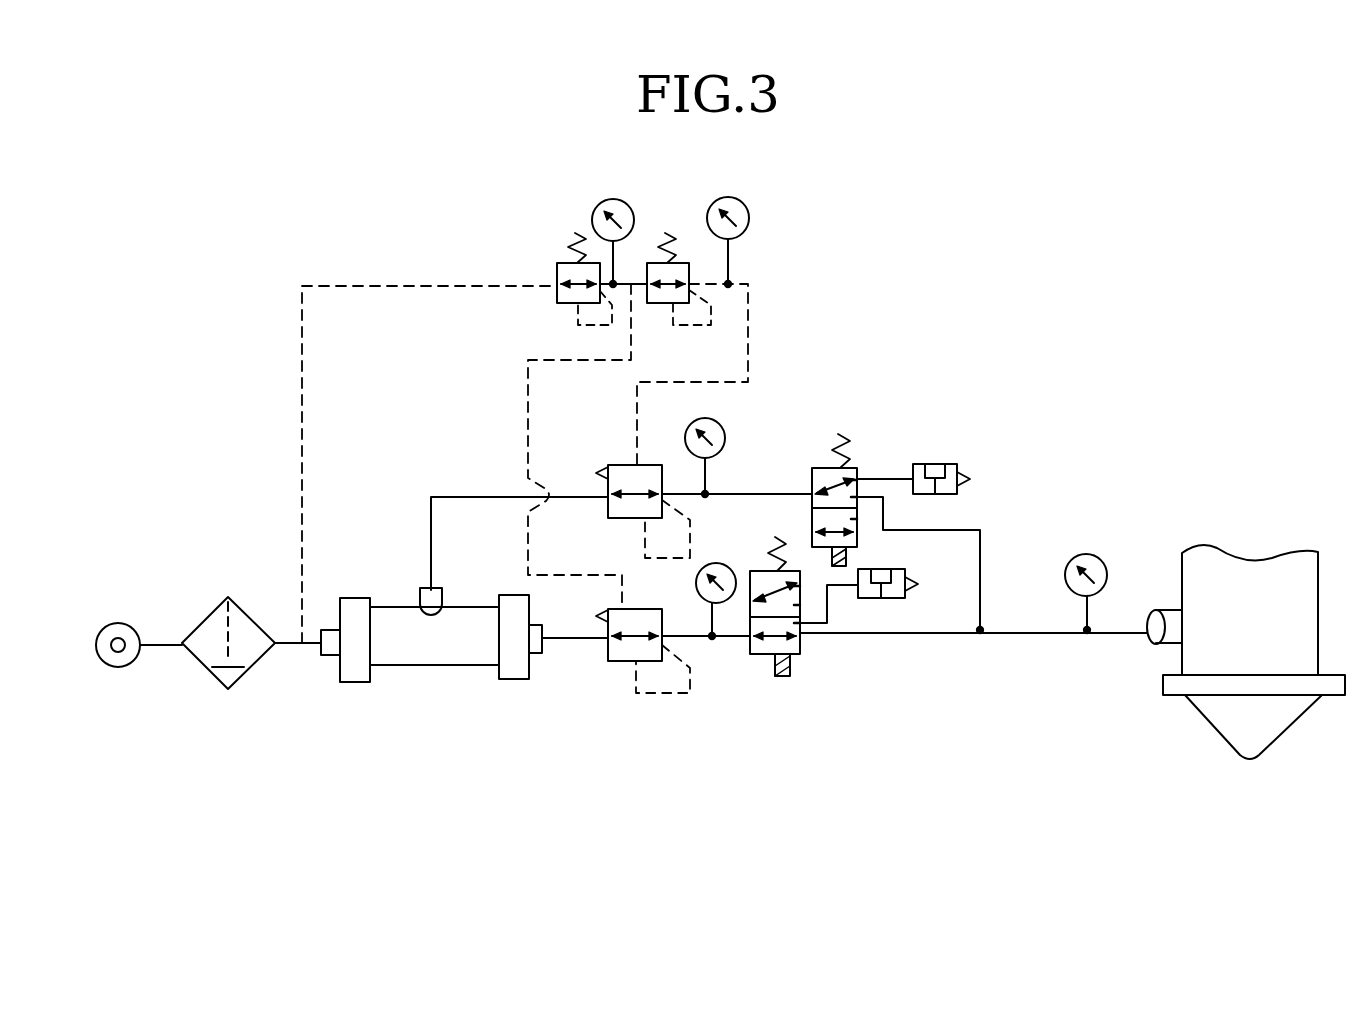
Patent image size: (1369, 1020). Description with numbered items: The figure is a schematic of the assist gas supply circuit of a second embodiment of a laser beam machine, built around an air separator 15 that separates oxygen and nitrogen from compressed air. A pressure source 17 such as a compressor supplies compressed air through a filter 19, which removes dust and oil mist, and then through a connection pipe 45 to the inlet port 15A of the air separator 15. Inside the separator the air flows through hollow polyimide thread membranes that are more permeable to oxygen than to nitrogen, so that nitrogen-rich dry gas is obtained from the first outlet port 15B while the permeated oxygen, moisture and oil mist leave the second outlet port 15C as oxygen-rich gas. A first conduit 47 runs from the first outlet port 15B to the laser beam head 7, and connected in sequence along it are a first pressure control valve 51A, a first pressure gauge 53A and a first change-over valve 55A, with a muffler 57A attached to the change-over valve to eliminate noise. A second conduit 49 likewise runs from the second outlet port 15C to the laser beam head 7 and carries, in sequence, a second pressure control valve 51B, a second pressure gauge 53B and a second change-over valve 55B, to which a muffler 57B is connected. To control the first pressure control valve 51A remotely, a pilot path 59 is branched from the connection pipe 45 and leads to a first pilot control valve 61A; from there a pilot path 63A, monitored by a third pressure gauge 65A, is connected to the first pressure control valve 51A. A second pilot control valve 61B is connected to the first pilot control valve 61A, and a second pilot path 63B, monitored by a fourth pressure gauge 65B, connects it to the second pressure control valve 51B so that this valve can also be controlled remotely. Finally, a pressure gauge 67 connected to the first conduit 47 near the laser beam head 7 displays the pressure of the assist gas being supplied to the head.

The laser beam head 7 is at (1308, 630).
The air separator 15 is at (430, 657).
The inlet port 15A is at (330, 656).
The first outlet port 15B is at (540, 656).
The second outlet port 15C is at (420, 604).
The pressure source 17 is at (122, 664).
The filter 19 is at (214, 682).
The connection pipe 45 is at (282, 647).
The first conduit 47 is at (875, 634).
The second conduit 49 is at (930, 528).
The first pressure control valve 51A is at (614, 663).
The second pressure control valve 51B is at (625, 476).
The first pressure gauge 53A is at (724, 605).
The second pressure gauge 53B is at (726, 438).
The first change-over valve 55A is at (801, 656).
The second change-over valve 55B is at (850, 468).
The muffler 57A is at (888, 599).
The muffler 57B is at (940, 464).
The pilot path 59 is at (300, 412).
The first pilot control valve 61A is at (556, 297).
The second pilot control valve 61B is at (682, 262).
The pilot path 63A is at (526, 413).
The second pilot path 63B is at (748, 333).
The third pressure gauge 65A is at (612, 199).
The fourth pressure gauge 65B is at (750, 218).
The pressure gauge 67 is at (1094, 554).